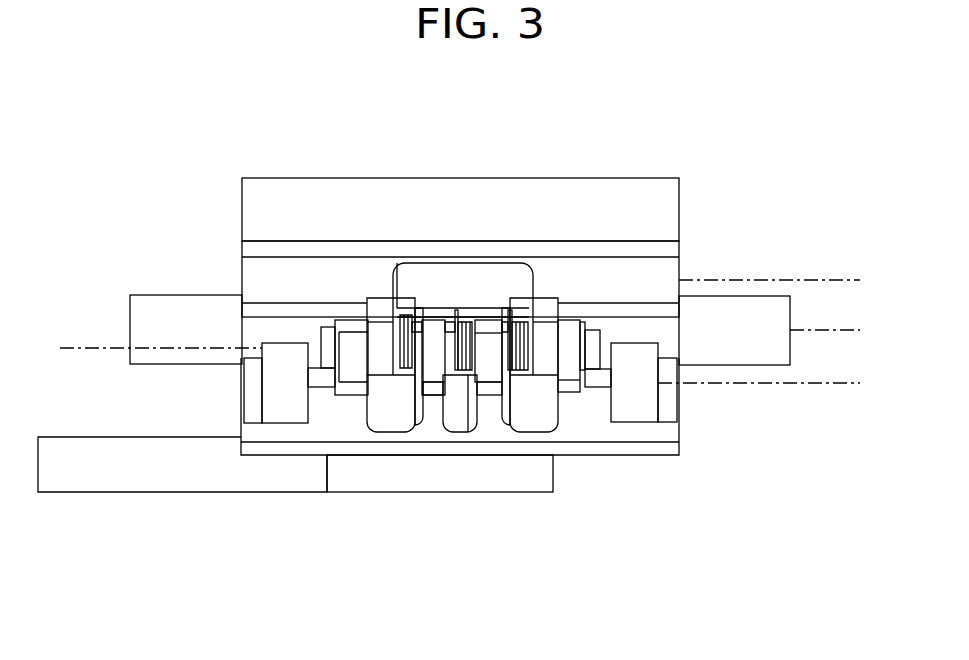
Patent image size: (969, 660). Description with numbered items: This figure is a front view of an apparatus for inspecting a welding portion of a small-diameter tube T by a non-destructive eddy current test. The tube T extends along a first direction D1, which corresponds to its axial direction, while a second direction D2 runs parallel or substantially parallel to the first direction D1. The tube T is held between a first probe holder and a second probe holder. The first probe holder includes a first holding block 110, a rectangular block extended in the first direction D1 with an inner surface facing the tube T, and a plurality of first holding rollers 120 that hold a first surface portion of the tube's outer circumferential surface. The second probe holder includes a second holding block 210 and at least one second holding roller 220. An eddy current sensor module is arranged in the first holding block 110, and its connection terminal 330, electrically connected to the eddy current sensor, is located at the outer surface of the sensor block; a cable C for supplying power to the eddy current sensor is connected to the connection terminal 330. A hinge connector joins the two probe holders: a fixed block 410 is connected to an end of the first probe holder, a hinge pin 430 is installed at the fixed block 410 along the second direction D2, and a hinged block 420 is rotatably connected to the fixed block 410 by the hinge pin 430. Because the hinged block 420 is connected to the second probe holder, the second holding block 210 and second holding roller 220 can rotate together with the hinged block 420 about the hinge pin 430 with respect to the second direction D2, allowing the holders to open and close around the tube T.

The first holding block 110 is at (590, 433).
The first holding rollers 120 is at (285, 412).
The second holding block 210 is at (494, 183).
The second holding roller 220 is at (634, 264).
The connection terminal 330 is at (481, 478).
The fixed block 410 is at (388, 415).
The hinged block 420 is at (431, 338).
The hinge pin 430 is at (325, 334).
The tube T is at (161, 302).
The cable C is at (163, 490).
The first direction D1 is at (841, 330).
The second direction D2 is at (463, 332).